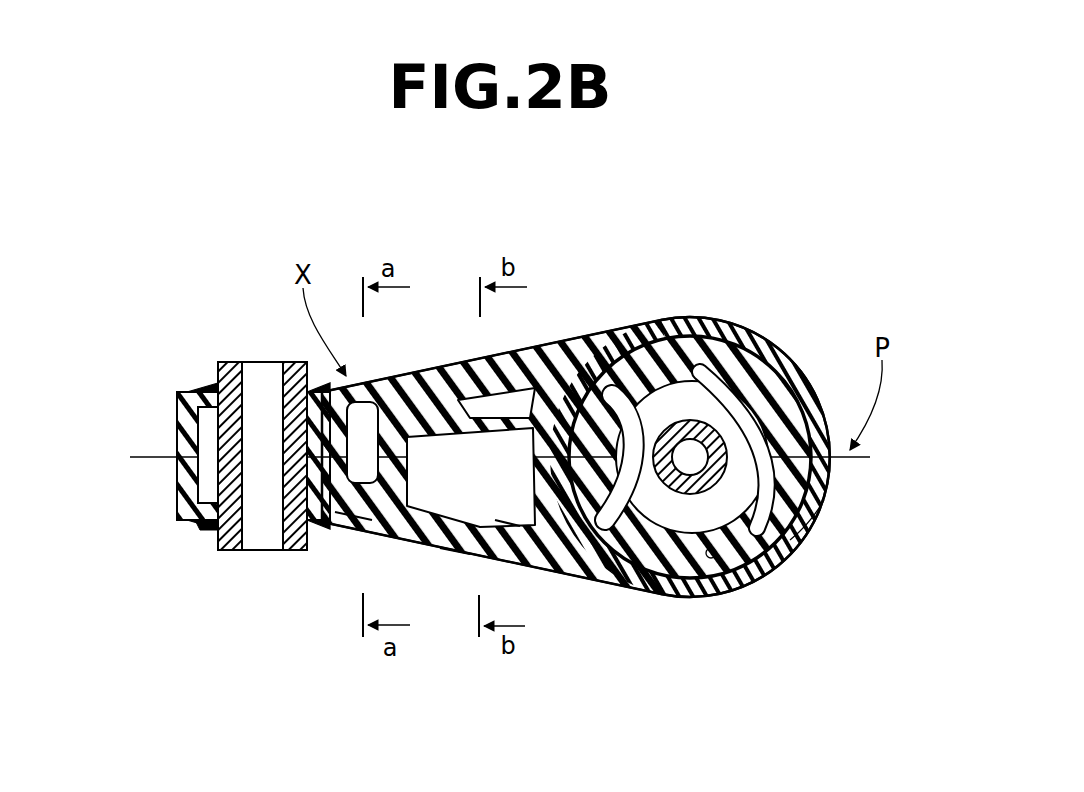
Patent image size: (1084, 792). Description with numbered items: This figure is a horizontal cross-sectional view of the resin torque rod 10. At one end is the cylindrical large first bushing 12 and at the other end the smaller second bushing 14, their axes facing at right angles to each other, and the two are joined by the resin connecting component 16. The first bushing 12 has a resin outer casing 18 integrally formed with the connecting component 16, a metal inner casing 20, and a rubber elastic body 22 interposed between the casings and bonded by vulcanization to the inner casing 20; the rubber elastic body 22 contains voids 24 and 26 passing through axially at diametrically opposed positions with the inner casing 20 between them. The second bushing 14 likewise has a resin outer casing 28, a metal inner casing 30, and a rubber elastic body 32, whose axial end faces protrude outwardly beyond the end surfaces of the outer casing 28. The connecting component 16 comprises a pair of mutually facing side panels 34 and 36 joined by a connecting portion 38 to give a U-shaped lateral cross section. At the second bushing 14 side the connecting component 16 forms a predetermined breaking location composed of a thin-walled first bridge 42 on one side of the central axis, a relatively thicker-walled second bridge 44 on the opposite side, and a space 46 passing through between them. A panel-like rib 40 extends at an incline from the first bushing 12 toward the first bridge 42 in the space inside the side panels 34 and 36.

The torque rod 10 is at (574, 285).
The first bushing 12 is at (757, 328).
The second bushing 14 is at (173, 409).
The resin connecting component 16 is at (449, 366).
The resin outer casing 18 is at (808, 517).
The metal inner casing 20 is at (716, 420).
The rubber elastic body 22 is at (673, 362).
The void 24 is at (710, 558).
The void 26 is at (612, 524).
The resin outer casing 28 is at (176, 478).
The metal inner casing 30 is at (233, 362).
The rubber elastic body 32 is at (207, 523).
The side panel 34 is at (456, 545).
The side panel 36 is at (497, 355).
The connecting portion 38 is at (507, 542).
The rib 40 is at (455, 462).
The first bridge 42 is at (370, 400).
The second bridge 44 is at (358, 521).
The space 46 is at (283, 530).